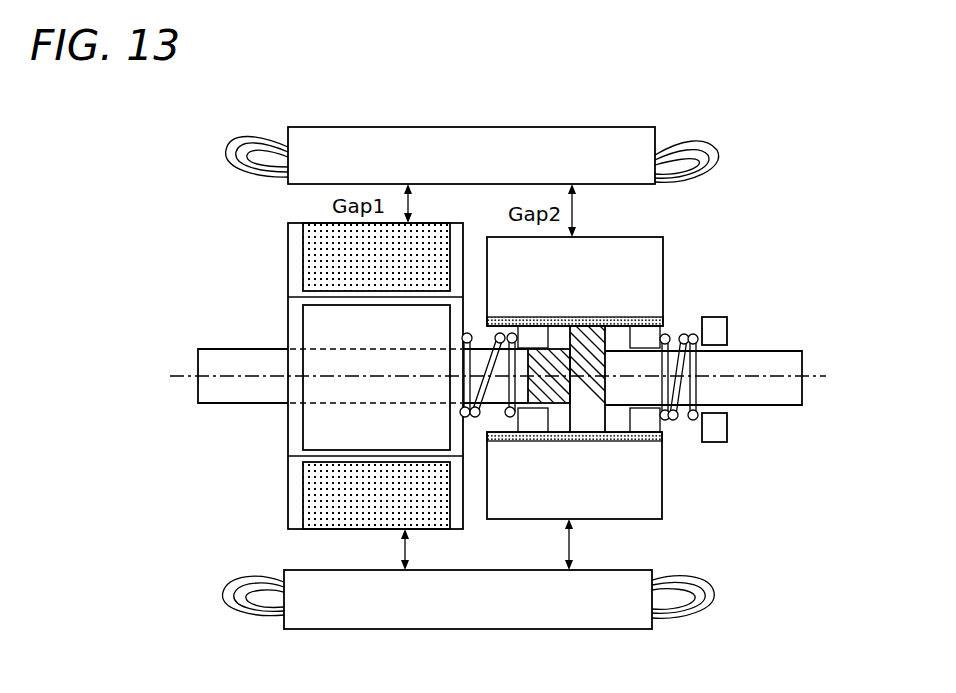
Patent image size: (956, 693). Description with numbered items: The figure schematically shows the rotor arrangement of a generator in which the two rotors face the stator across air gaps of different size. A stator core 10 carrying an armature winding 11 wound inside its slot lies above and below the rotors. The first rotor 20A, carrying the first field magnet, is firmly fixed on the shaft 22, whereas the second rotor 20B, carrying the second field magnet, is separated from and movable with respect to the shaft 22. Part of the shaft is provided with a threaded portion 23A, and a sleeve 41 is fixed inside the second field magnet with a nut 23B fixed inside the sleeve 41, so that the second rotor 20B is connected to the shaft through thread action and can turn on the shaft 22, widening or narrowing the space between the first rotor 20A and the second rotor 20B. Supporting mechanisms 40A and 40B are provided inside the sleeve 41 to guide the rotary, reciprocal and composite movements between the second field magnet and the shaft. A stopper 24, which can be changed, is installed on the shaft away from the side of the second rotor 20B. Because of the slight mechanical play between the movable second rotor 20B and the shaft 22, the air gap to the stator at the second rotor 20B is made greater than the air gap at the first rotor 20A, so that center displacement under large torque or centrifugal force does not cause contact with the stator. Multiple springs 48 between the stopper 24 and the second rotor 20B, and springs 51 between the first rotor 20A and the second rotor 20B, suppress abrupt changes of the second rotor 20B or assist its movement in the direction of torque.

The stator core 10 is at (332, 148).
The armature winding 11 is at (262, 138).
The first rotor 20A is at (288, 250).
The second rotor 20B is at (664, 239).
The shaft 22 is at (228, 404).
The threaded portion 23A is at (608, 322).
The nut 23B is at (587, 340).
The stopper 24 is at (728, 330).
The supporting mechanism 40A is at (532, 422).
The supporting mechanism 40B is at (640, 422).
The sleeve 41 is at (664, 436).
The springs 48 is at (476, 420).
The springs 51 is at (668, 322).